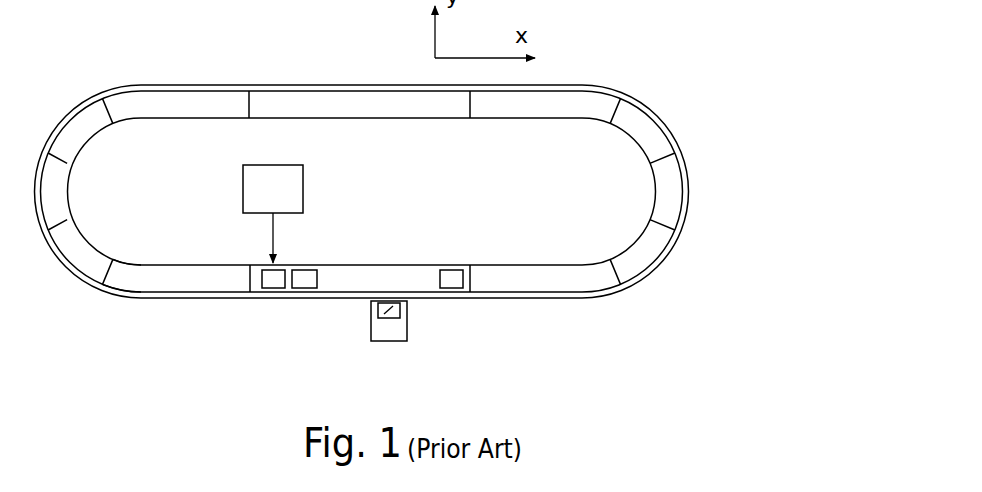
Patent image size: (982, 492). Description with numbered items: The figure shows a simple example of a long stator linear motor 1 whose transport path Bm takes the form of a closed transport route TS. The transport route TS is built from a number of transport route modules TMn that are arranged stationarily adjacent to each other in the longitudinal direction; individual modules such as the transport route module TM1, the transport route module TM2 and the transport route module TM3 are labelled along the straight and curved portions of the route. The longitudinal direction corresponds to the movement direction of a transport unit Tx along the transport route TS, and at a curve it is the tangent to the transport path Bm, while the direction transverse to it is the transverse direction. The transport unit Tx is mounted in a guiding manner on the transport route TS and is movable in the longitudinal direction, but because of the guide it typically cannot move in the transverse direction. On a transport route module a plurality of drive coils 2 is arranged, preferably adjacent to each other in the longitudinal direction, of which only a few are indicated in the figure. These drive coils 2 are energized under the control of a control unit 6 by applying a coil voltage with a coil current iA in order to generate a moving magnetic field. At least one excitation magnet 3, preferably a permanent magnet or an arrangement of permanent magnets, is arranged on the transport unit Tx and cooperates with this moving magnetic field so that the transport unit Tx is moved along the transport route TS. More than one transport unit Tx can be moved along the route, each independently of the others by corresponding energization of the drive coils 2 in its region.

The long stator linear motor 1 is at (697, 79).
The drive coils 2 is at (457, 283).
The excitation magnet 3 is at (370, 325).
The control unit 6 is at (280, 197).
The transport route modules TMn is at (199, 107).
The transport route module TM3 is at (310, 110).
The transport route module TM1 is at (348, 280).
The transport route module TM2 is at (572, 275).
The transport route TS is at (168, 302).
The transport unit Tx is at (388, 328).
The transport path Bm is at (670, 273).
The coil current iA is at (260, 238).